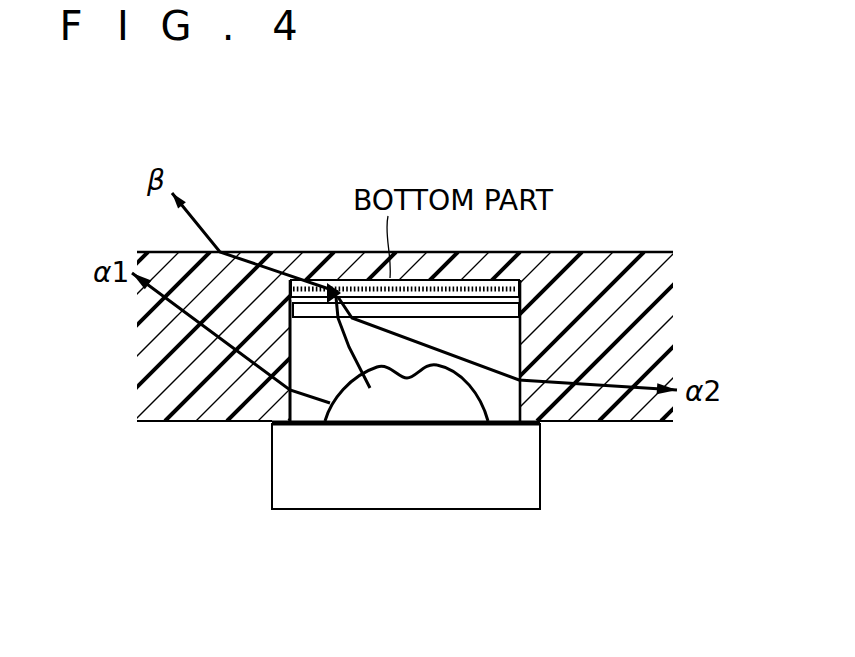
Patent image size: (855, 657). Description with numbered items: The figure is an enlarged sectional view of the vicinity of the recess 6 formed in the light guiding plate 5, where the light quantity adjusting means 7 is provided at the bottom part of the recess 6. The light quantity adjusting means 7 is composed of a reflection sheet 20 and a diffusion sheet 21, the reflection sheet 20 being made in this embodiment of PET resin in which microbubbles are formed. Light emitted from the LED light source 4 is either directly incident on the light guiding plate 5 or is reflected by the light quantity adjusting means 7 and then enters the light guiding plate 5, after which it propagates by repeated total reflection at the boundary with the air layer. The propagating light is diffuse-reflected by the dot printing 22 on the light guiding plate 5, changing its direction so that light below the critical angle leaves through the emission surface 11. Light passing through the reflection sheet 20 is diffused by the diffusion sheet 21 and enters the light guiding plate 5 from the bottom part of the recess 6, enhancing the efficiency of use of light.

The LED light source 4 is at (410, 500).
The light guiding plate 5 is at (178, 422).
The recess 6 is at (291, 337).
The light quantity adjusting means 7 is at (544, 303).
The emission surface 11 is at (164, 252).
The reflection sheet 20 is at (508, 311).
The diffusion sheet 21 is at (508, 289).
The dot printing 22 is at (625, 421).